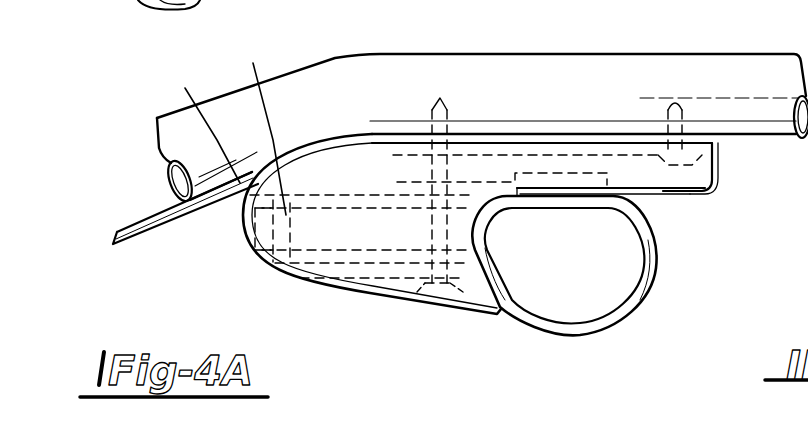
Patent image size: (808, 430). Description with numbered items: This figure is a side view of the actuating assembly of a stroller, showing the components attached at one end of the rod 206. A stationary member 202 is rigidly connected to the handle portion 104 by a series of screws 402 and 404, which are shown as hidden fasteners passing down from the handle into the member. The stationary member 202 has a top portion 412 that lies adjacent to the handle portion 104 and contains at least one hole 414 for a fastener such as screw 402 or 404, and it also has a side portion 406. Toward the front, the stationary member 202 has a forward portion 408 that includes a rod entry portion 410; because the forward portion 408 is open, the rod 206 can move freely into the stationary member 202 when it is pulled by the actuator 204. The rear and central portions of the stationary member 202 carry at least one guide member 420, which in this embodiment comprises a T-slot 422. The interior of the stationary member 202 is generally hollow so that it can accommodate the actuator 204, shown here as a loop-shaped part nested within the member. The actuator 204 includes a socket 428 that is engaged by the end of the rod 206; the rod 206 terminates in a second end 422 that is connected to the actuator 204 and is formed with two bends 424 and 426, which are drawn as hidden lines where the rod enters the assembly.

The handle portion 104 is at (292, 93).
The stationary member 202 is at (397, 287).
The actuator 204 is at (623, 307).
The rod 206 is at (137, 230).
The screw 402 is at (442, 100).
The screw 404 is at (673, 100).
The side portion 406 is at (683, 178).
The forward portion 408 is at (253, 257).
The rod entry portion 410 is at (258, 72).
The top portion 412 is at (567, 150).
The hole 414 is at (448, 136).
The guide member 420 is at (667, 190).
The second end 422 is at (190, 98).
The bend 424 is at (240, 214).
The bend 426 is at (272, 262).
The socket 428 is at (296, 262).